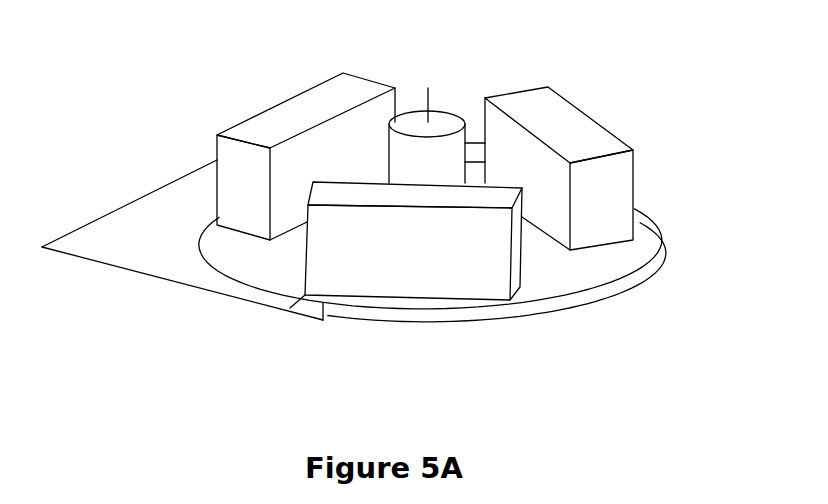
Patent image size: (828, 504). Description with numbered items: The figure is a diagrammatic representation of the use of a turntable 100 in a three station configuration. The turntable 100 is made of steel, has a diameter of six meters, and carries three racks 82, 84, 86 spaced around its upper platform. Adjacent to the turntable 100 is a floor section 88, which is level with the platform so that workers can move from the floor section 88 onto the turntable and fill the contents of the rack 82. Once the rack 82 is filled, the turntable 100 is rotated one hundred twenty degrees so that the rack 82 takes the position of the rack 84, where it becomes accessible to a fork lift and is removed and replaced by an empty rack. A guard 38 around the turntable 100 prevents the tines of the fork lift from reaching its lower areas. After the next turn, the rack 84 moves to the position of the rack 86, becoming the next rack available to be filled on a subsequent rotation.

The rack 82 is at (307, 105).
The rack 84 is at (540, 110).
The rack 86 is at (450, 283).
The floor section 88 is at (155, 208).
The turntable 100 is at (560, 277).
The guard 38 is at (643, 272).